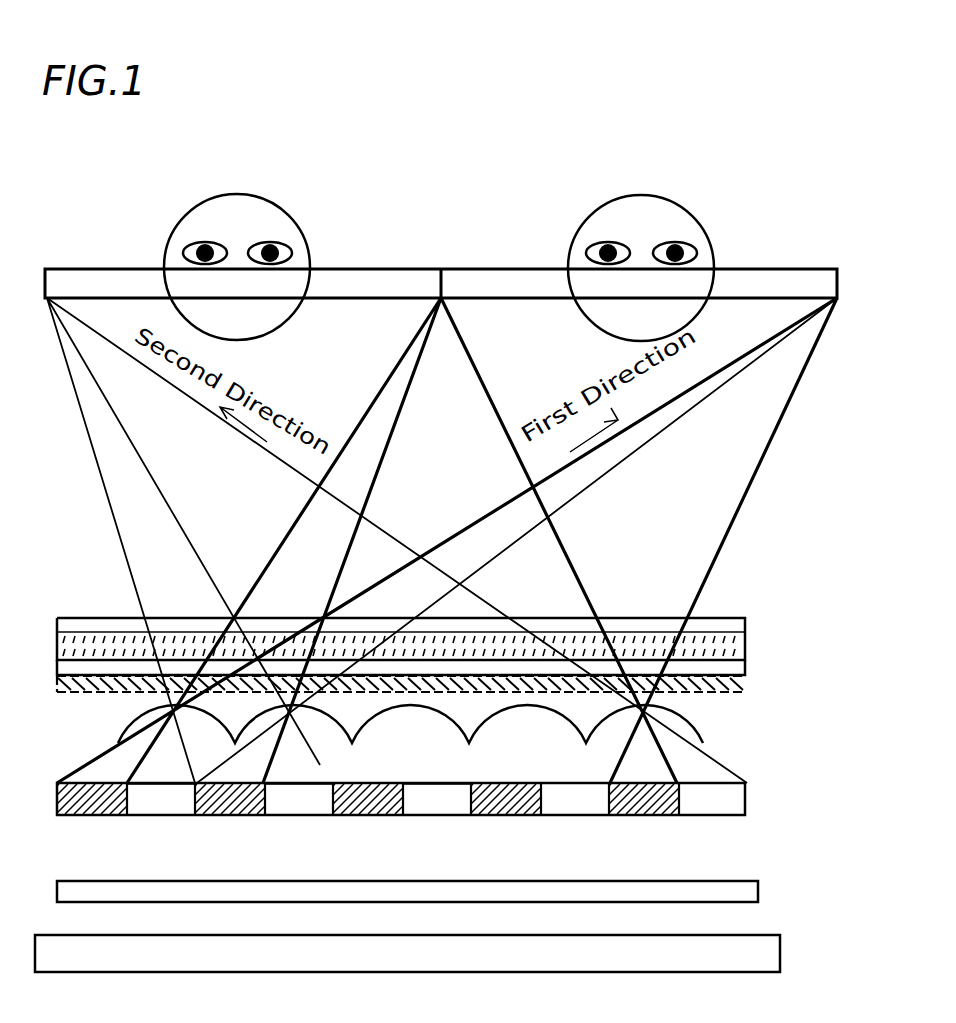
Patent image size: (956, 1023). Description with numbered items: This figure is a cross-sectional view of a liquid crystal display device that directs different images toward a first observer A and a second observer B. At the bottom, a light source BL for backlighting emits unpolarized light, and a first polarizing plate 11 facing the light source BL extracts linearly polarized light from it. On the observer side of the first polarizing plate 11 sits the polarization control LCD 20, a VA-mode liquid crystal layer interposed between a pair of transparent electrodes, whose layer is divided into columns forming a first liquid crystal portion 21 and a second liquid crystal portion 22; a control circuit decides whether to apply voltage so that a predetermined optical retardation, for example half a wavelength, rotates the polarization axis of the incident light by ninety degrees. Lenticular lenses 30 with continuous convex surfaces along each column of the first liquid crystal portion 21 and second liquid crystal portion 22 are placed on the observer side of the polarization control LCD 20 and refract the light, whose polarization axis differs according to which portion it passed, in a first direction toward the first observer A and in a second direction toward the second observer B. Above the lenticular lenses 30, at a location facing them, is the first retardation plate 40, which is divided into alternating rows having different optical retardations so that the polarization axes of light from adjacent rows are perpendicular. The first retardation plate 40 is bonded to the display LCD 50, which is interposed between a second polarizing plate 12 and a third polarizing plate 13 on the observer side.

The first observer A is at (663, 182).
The second observer B is at (252, 180).
The third polarizing plate 13 is at (727, 625).
The display LCD 50 is at (737, 645).
The second polarizing plate 12 is at (740, 672).
The first retardation plate 40 is at (742, 687).
The lenticular lenses 30 is at (705, 731).
The polarization control LCD 20 is at (746, 801).
The first liquid crystal portion 21 is at (100, 816).
The second liquid crystal portion 22 is at (162, 802).
The first polarizing plate 11 is at (755, 889).
The light source BL is at (774, 952).